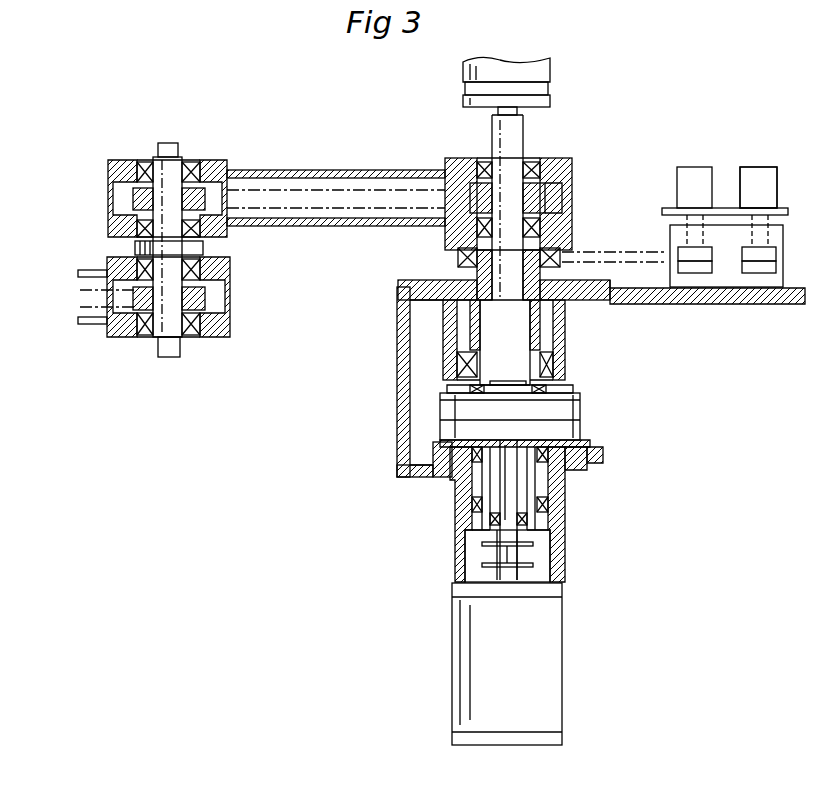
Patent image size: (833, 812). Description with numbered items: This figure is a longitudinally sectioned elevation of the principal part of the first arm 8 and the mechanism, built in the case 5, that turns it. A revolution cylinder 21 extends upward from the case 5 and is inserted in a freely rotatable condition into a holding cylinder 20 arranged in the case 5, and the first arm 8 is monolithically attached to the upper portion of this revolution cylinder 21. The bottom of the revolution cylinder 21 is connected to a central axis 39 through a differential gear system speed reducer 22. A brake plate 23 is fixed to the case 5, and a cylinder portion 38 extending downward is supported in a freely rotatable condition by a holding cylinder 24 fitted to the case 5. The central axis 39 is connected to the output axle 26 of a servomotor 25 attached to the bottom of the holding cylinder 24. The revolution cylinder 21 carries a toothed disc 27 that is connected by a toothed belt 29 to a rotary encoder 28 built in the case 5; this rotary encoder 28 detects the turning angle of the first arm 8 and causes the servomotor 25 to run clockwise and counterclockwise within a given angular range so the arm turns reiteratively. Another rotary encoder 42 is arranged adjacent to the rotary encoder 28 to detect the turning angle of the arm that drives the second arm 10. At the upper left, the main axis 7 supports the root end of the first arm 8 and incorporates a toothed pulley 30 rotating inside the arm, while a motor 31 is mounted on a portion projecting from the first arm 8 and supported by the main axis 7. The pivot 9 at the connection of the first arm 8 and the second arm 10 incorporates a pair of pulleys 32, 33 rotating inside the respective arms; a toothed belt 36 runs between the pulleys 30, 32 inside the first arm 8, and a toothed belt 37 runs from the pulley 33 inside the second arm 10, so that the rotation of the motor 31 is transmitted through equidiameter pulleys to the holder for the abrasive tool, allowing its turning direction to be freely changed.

The case 5 is at (400, 385).
The main axis 7 is at (523, 137).
The No.1 arm 8 is at (355, 170).
The pivot 9 is at (170, 155).
The No.2 arm 10 is at (86, 268).
The holding cylinder 20 is at (567, 330).
The revolution cylinder 21 is at (473, 322).
The differential gear system speed reducer 22 is at (440, 410).
The brake plate 23 is at (580, 423).
The holding cylinder 24 is at (565, 505).
The servomotor 25 is at (455, 660).
The output axle 26 is at (480, 550).
The toothed disc 27 is at (458, 258).
The rotary encoder 28 is at (680, 183).
The toothed belt 29 is at (610, 250).
The toothed pulley 30 is at (547, 195).
The motor 31 is at (552, 67).
The pulley 32 is at (135, 196).
The pulley 33 is at (203, 295).
The toothed belt 36 is at (267, 187).
The toothed belt 37 is at (90, 325).
The cylinder portion 38 is at (548, 500).
The central axis 39 is at (520, 512).
The rotary encoder 42 is at (760, 168).